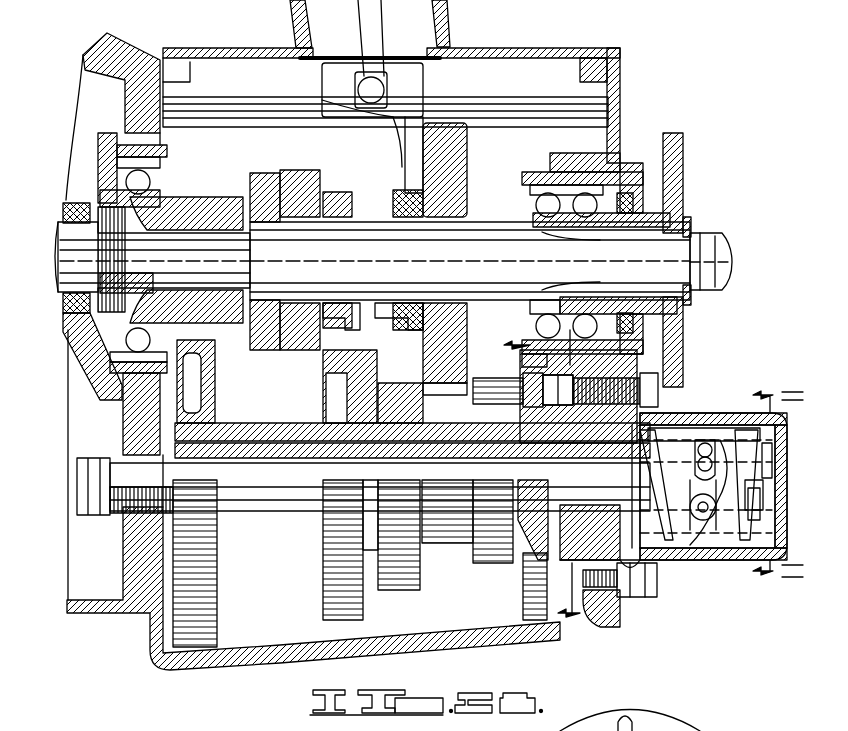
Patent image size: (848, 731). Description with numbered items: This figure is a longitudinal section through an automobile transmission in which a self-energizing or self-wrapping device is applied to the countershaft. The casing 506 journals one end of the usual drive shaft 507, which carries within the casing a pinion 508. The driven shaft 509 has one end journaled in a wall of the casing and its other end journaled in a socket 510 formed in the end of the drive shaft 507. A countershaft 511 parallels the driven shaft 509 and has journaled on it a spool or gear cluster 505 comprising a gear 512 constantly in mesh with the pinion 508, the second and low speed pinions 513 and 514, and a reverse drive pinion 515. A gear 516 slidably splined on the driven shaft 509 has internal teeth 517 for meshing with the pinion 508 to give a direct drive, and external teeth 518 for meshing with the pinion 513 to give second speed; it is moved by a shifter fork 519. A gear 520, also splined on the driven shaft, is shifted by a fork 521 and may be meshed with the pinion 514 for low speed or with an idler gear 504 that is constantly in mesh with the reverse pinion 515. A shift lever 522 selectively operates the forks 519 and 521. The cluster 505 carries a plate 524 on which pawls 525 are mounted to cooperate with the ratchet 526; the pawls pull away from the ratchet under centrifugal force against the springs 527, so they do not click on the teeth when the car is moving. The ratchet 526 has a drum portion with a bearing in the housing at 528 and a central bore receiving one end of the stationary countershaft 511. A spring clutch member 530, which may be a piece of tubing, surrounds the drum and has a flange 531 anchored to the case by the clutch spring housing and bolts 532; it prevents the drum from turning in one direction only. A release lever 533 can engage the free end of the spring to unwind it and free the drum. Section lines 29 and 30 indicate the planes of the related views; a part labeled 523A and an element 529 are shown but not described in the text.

The section line 29- 29 is at (530, 473).
The section line 30- 30 is at (777, 488).
The idler gear 504 is at (490, 385).
The spool or gear cluster 505 is at (254, 555).
The casing 506 is at (213, 656).
The drive shaft 507 is at (65, 305).
The pinion 508 is at (212, 190).
The driven shaft 509 is at (377, 287).
The socket 510 is at (200, 233).
The countershaft 511 is at (273, 470).
The gear 512 is at (197, 405).
The second speed pinion 513 is at (363, 612).
The low speed pinion 514 is at (420, 588).
The reverse drive pinion 515 is at (468, 548).
The gear 516 is at (322, 190).
The internal teeth 517 is at (270, 172).
The external teeth 518 is at (283, 172).
The shifter fork 519 is at (338, 190).
The gear 520 is at (457, 143).
The fork 521 is at (417, 128).
The shift lever 522 is at (372, 17).
The flange 523A is at (723, 412).
The plate 524 is at (575, 626).
The pawls 525 is at (707, 261).
The ratchet 526 is at (555, 440).
The springs 527 is at (643, 427).
The bearing 528 is at (592, 460).
The brake shoe 529 is at (773, 477).
The spring clutch member 530 is at (660, 560).
The flange 531 is at (640, 600).
The bolts 532 is at (657, 585).
The release lever 533 is at (757, 500).